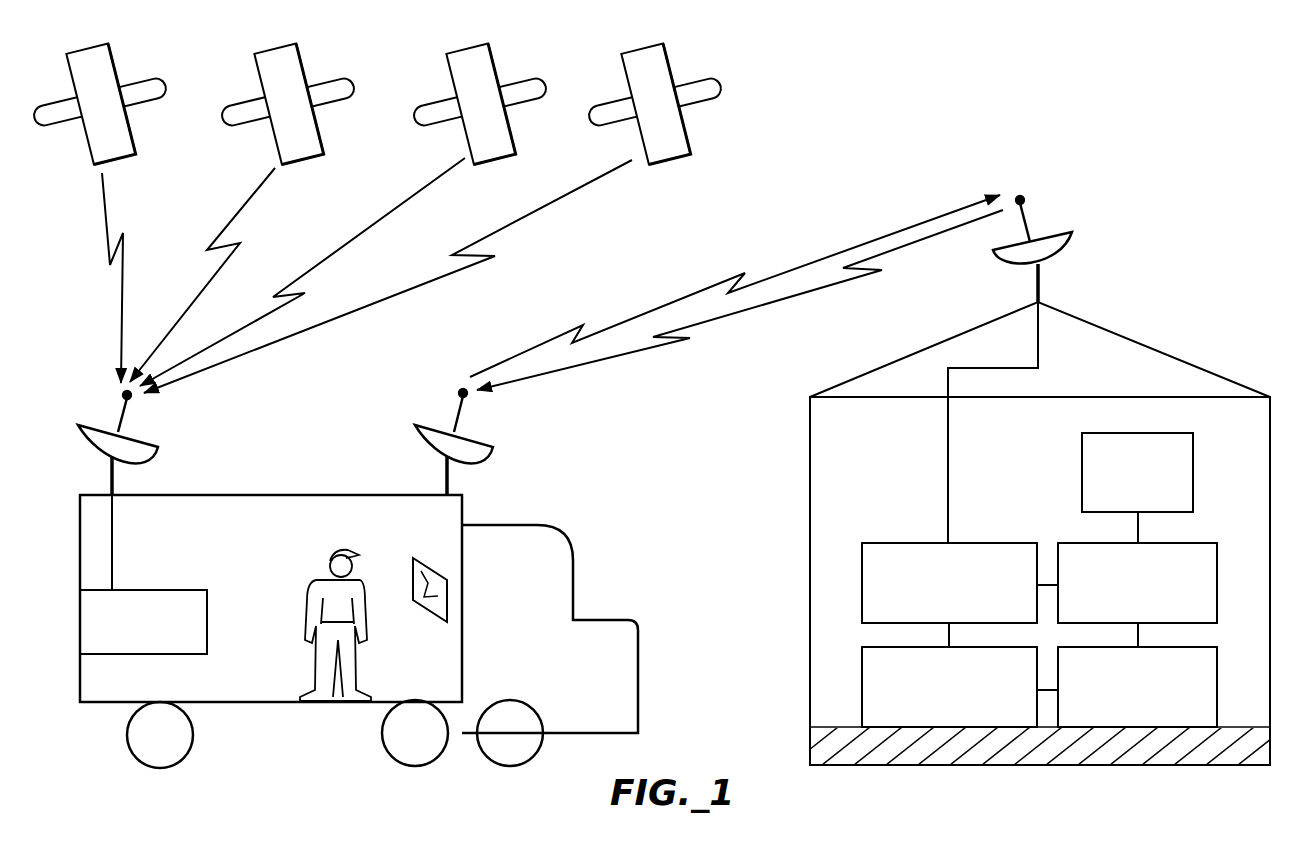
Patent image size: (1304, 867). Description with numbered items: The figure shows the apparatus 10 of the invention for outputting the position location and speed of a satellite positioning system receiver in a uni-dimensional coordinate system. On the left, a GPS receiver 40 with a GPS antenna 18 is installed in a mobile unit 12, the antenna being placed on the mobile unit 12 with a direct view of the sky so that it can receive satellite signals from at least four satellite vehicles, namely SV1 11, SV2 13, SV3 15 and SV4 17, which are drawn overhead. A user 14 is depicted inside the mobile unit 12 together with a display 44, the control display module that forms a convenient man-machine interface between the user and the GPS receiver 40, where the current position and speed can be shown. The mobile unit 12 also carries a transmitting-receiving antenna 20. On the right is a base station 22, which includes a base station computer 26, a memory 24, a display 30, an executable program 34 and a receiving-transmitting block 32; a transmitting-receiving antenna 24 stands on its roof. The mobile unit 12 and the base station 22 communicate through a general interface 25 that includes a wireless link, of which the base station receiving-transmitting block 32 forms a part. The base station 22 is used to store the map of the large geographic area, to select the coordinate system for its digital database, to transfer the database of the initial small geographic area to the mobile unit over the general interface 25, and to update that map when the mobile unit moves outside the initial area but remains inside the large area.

The apparatus for outputting position location and speed in a uni-dimensional coordi 10 is at (105, 725).
The satellite-vehicle SV1 11 is at (115, 63).
The satellite-vehicle SV2 13 is at (303, 63).
The satellite-vehicle SV3 15 is at (495, 63).
The satellite-vehicle SV4 17 is at (670, 63).
The mobile unit 12 is at (271, 598).
The user 14 is at (317, 660).
The GPS antenna 18 is at (143, 442).
The transmitting-receiving antenna 20 is at (477, 440).
The base station 22 is at (810, 550).
The memory 24 is at (1047, 234).
The general interface 25 is at (693, 293).
The base station computer 26 is at (1205, 647).
The display 30 is at (1140, 433).
The receiving-transmitting block 32 is at (921, 543).
The executable program 34 is at (1080, 543).
The GPS receiver 40 is at (92, 590).
The display 44 is at (428, 560).